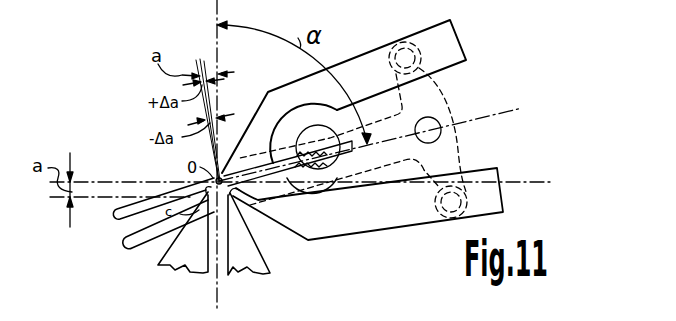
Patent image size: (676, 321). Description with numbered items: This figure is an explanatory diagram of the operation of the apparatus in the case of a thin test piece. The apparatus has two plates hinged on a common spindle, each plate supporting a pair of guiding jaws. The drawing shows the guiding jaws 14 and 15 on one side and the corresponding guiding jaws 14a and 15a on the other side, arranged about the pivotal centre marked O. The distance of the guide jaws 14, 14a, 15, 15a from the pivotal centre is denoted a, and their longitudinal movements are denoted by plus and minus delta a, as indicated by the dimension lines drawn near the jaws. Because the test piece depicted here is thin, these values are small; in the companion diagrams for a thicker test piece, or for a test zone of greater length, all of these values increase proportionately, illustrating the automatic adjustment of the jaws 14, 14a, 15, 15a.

The guiding jaw 14 is at (215, 248).
The guiding jaw 14a is at (227, 248).
The guiding jaw 15 is at (290, 119).
The guiding jaw 15a is at (313, 204).